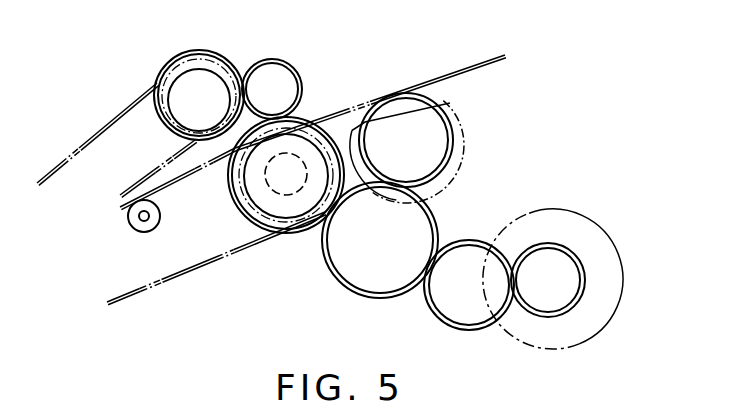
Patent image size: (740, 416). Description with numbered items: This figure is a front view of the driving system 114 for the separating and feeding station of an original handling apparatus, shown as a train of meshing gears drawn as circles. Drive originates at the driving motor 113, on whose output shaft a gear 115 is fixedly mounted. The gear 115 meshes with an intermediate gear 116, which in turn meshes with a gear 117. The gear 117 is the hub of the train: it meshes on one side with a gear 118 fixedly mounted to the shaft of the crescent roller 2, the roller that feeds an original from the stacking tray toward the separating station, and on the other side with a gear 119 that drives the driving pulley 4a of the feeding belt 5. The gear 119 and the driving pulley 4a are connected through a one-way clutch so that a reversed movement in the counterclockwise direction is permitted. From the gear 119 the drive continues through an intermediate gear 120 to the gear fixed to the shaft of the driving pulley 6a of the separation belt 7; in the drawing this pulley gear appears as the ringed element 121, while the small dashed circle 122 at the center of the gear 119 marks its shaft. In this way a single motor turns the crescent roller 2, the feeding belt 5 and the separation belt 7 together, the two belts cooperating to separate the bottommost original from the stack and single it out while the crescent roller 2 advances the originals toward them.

The crescent roller 2 is at (442, 183).
The driving pulley 4a is at (253, 212).
The feeding belt 5 is at (168, 279).
The driving pulley 6a is at (142, 95).
The separation belt 7 is at (87, 138).
The driving motor 113 is at (580, 212).
The driving system 114 is at (328, 287).
The gear 115 is at (580, 302).
The intermediate gear 116 is at (477, 333).
The gear 117 is at (393, 300).
The gear 118 is at (456, 137).
The gear 119 is at (307, 120).
The intermediate gear 120 is at (290, 58).
The roller 121 is at (213, 50).
The shaft 122 is at (289, 196).